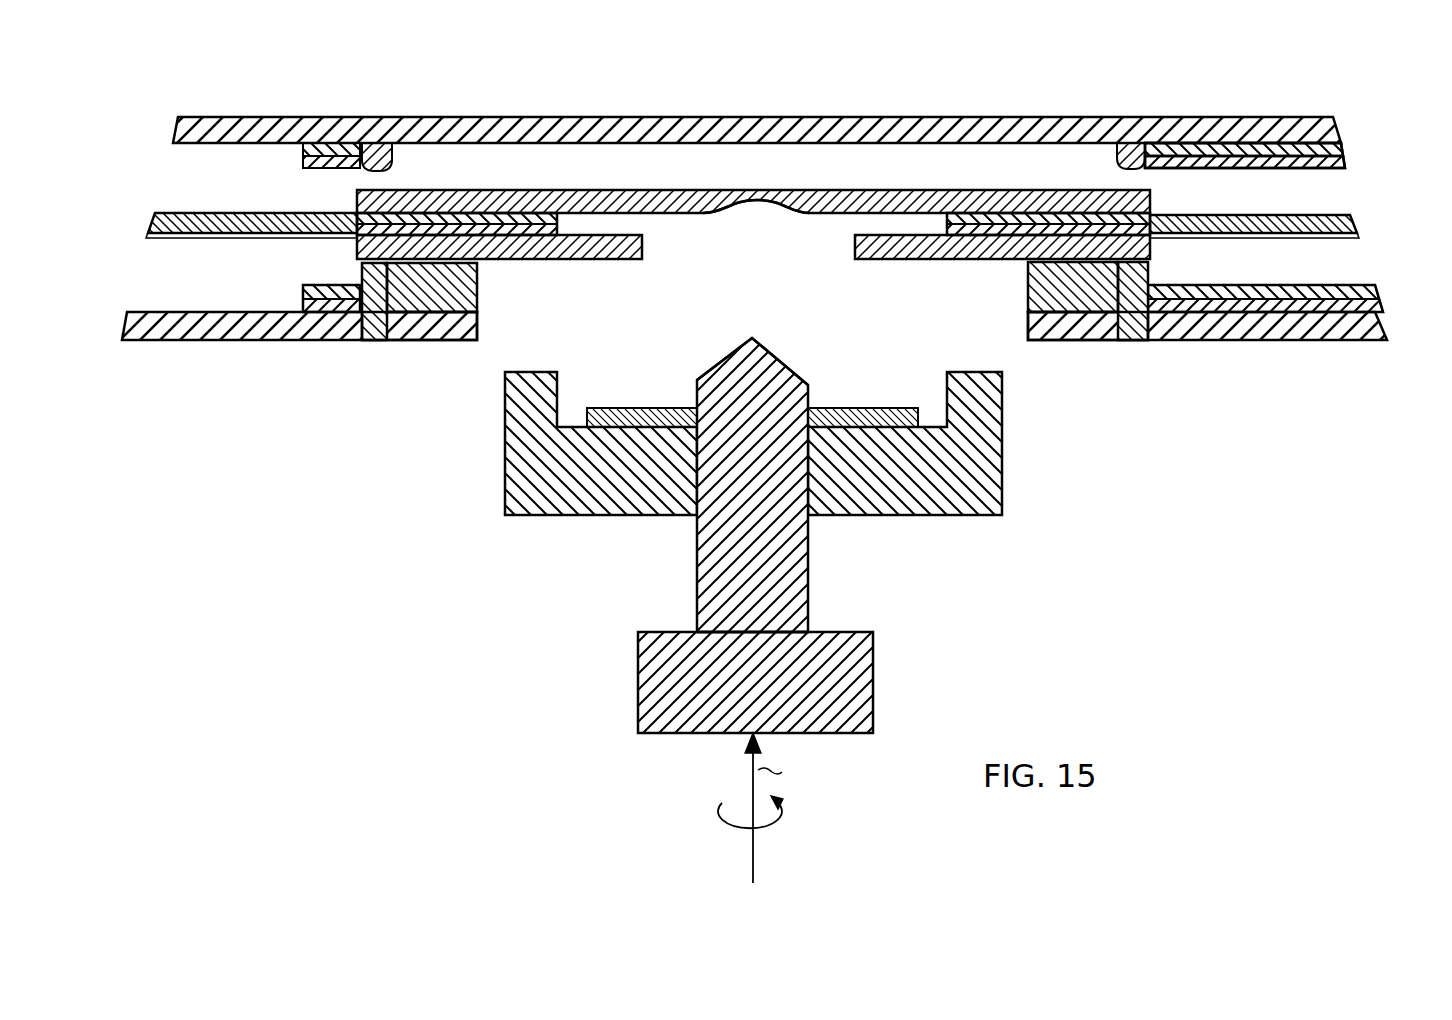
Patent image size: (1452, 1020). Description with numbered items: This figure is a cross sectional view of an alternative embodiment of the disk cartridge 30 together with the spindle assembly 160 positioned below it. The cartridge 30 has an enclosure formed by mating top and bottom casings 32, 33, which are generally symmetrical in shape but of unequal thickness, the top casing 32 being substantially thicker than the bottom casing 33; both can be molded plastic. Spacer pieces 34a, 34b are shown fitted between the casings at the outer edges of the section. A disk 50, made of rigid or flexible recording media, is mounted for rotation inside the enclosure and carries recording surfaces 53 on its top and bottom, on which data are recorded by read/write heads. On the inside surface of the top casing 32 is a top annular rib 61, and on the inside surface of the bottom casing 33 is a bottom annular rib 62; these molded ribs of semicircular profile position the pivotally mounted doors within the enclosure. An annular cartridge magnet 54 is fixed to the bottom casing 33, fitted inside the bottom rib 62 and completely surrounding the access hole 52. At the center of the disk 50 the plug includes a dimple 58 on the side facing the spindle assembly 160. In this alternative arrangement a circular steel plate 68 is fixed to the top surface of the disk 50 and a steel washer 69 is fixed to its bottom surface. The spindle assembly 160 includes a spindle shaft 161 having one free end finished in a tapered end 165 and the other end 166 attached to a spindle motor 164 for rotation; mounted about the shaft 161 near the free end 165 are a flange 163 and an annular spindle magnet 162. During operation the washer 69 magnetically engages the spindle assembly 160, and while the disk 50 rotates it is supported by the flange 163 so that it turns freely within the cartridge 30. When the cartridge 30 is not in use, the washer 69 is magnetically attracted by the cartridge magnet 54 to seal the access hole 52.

The disk cartridge 30 is at (733, 88).
The top casing 32 is at (428, 117).
The bottom casing 33 is at (300, 340).
The upper spacer 34a is at (1341, 150).
The lower spacer 34b is at (1370, 292).
The disk 50 is at (723, 227).
The access hole 52 is at (478, 325).
The recording surfaces 53 is at (281, 213).
The annular cartridge magnet 54 is at (477, 290).
The dimple 58 is at (752, 210).
The top annular rib 61 is at (387, 169).
The bottom annular rib 62 is at (378, 276).
The circular steel plate 68 is at (753, 226).
The steel washer 69 is at (608, 259).
The spindle assembly 160 is at (776, 593).
The spindle shaft 161 is at (786, 467).
The annular spindle magnet 162 is at (665, 408).
The flange 163 is at (1002, 455).
The spindle motor 164 is at (795, 682).
The tapered end 165 is at (755, 338).
The other end 166 is at (808, 631).